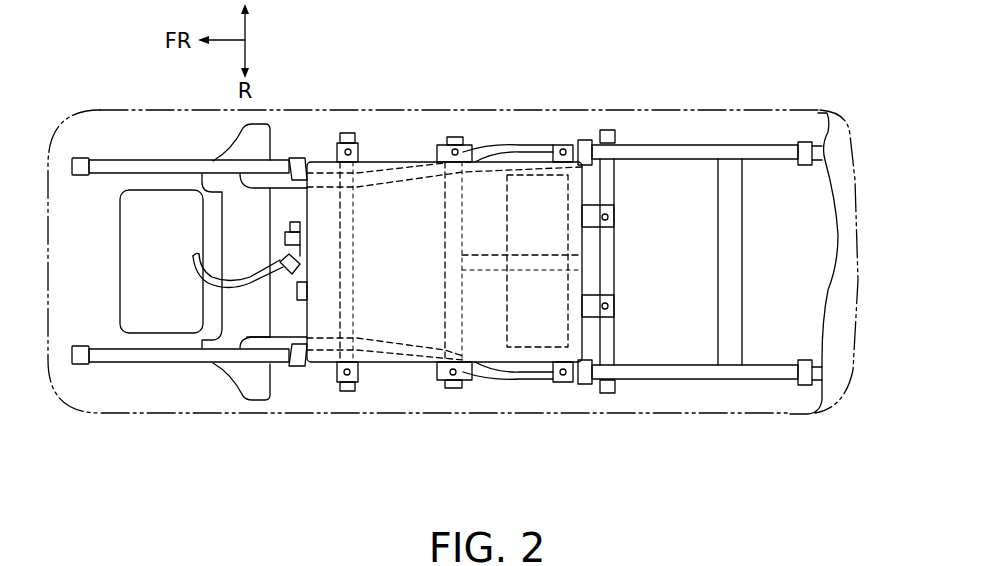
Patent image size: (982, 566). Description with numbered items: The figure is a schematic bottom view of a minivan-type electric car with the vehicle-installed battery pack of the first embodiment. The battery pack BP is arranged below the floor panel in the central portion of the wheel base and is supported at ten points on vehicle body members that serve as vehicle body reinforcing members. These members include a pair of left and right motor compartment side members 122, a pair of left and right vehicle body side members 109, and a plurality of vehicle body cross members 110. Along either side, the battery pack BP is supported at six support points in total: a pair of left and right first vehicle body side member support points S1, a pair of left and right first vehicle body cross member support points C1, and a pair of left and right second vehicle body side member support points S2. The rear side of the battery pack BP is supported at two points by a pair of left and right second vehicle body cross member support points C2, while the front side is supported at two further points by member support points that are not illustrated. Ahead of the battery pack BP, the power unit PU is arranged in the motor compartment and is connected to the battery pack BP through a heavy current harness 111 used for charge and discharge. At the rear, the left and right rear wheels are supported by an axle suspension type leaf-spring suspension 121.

The motor compartment side member 122 is at (124, 160).
The power unit PU is at (120, 250).
The heavy current harness 111 is at (237, 300).
The battery pack BP is at (384, 155).
The vehicle body cross member 110 is at (445, 205).
The first vehicle body side member support point S1 is at (337, 151).
The first vehicle body cross member support point C1 is at (438, 145).
The second vehicle body side member support point S2 is at (563, 145).
The vehicle body side member 109 is at (495, 143).
The leaf-spring suspension 121 is at (653, 145).
The second vehicle body cross member support point C2 is at (615, 216).